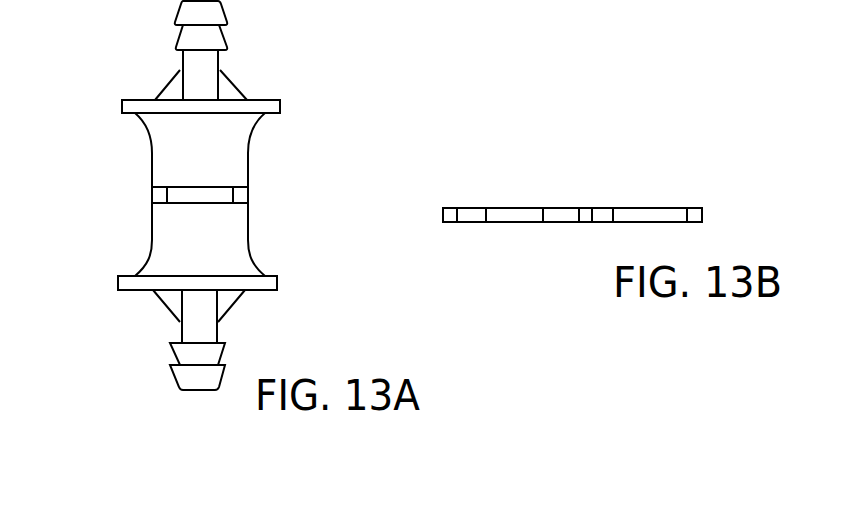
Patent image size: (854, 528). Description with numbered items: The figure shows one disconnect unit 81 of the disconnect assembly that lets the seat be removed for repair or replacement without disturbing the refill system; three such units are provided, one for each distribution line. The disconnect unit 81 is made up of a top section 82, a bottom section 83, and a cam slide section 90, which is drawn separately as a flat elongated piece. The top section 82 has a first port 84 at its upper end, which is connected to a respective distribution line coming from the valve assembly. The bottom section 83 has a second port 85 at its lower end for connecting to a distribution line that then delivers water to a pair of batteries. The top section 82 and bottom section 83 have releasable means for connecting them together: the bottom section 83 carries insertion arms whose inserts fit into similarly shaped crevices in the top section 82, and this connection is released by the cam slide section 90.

In FIG. 13A, the disconnect unit 81 is at (80, 43).
In FIG. 13A, the top section 82 is at (248, 162).
In FIG. 13A, the bottom section 83 is at (253, 255).
In FIG. 13A, the first port 84 is at (227, 33).
In FIG. 13A, the second port 85 is at (172, 368).
In FIG. 13B, the cam slide section 90 is at (578, 155).